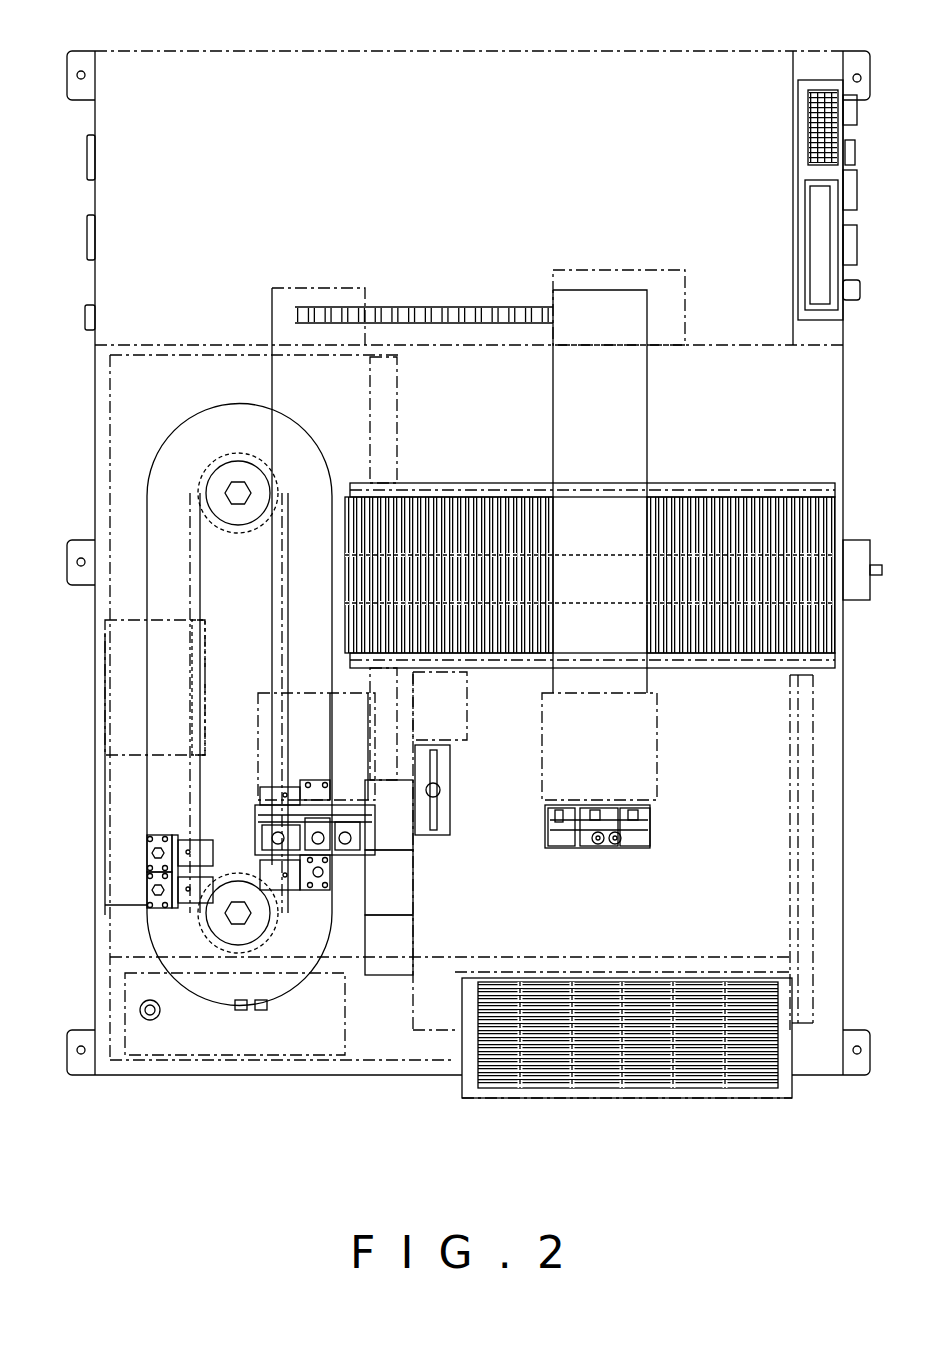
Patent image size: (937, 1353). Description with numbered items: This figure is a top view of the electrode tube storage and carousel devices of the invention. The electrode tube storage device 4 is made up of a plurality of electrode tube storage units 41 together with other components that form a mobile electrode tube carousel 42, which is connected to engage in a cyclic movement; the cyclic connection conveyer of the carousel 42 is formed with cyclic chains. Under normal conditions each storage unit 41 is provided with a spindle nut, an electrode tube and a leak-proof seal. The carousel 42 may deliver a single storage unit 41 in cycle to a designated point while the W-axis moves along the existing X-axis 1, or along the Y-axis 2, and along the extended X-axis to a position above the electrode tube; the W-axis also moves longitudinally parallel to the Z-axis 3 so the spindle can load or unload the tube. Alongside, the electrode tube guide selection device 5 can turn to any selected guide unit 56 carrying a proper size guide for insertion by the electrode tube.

The X-axis 1 is at (455, 497).
The Y-axis 2 is at (696, 1065).
The Z-axis 3 is at (657, 763).
The electrode tube storage device 4 is at (65, 628).
The electrode tube storage unit 41 is at (147, 855).
The electrode tube carousel 42 is at (228, 566).
The electrode tube guide selection device 5 is at (585, 800).
The guide unit 56 is at (613, 845).